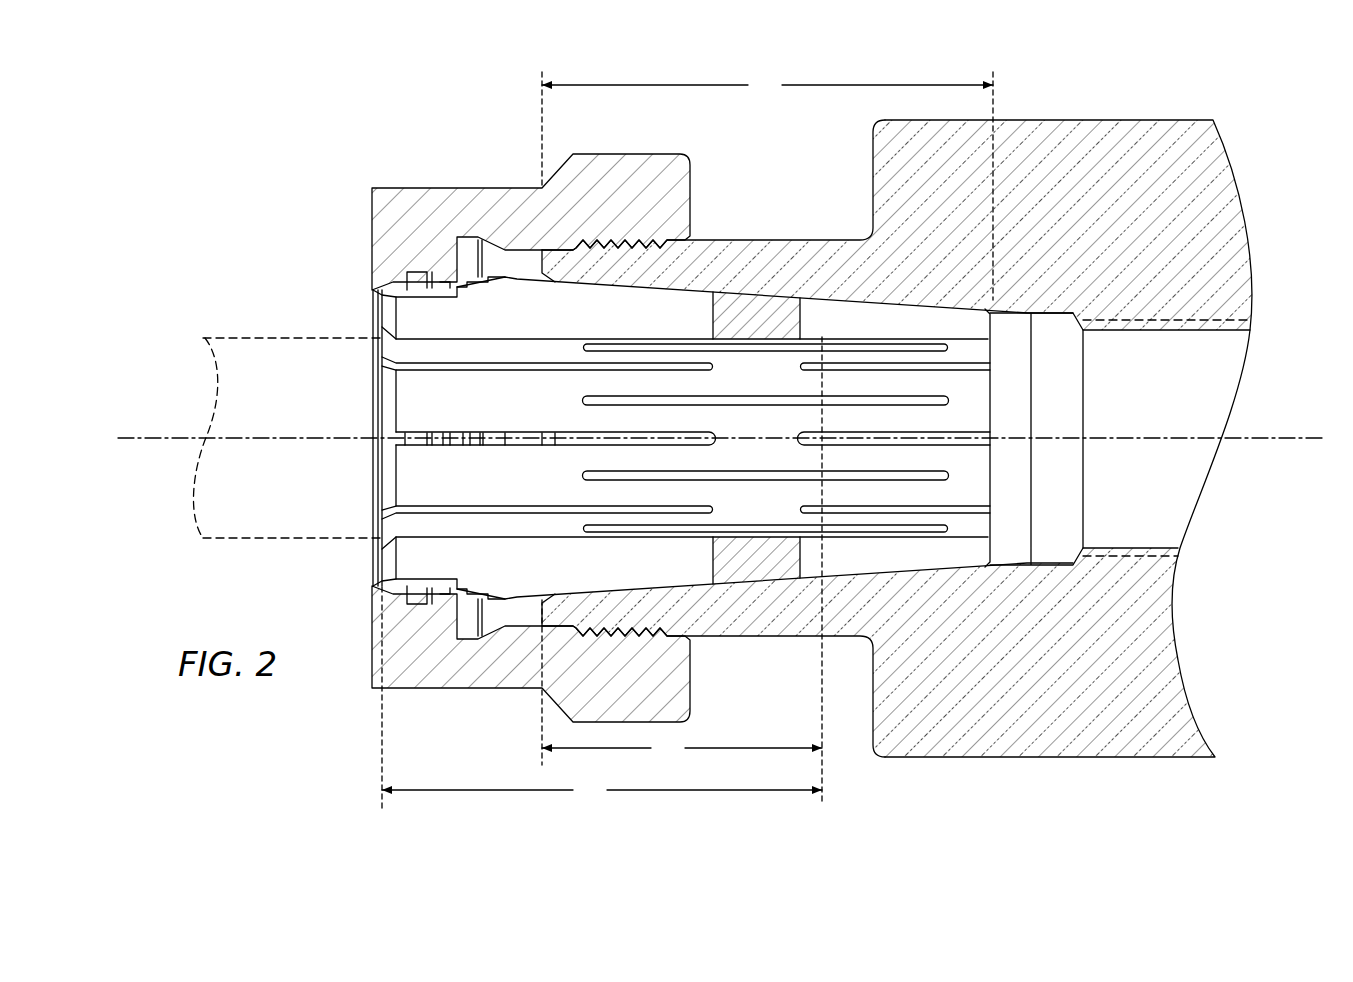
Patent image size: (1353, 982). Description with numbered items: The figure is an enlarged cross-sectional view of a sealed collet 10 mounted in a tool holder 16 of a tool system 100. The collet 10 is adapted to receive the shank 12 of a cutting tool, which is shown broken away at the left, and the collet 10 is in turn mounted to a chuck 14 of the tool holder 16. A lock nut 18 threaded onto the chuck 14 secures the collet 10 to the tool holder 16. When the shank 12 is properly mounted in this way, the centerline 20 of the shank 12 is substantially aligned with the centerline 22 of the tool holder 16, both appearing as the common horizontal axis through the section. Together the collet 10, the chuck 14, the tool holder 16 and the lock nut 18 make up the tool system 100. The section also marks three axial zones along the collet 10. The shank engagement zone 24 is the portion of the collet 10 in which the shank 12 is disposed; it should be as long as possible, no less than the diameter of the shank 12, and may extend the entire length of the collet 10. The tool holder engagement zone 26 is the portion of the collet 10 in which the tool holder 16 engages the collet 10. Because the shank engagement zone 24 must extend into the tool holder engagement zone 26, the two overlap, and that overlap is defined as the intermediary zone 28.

The tool system 100 is at (250, 119).
The sealed collet 10 is at (882, 582).
The shank 12 is at (262, 336).
The chuck 14 is at (794, 229).
The tool holder 16 is at (1124, 117).
The lock nut 18 is at (398, 186).
The centerline of the shank 20 is at (150, 440).
The centerline of the tool holder 22 is at (1270, 437).
The shank engagement zone 24 is at (602, 698).
The tool holder engagement zone 26 is at (767, 186).
The intermediary zone 28 is at (682, 571).